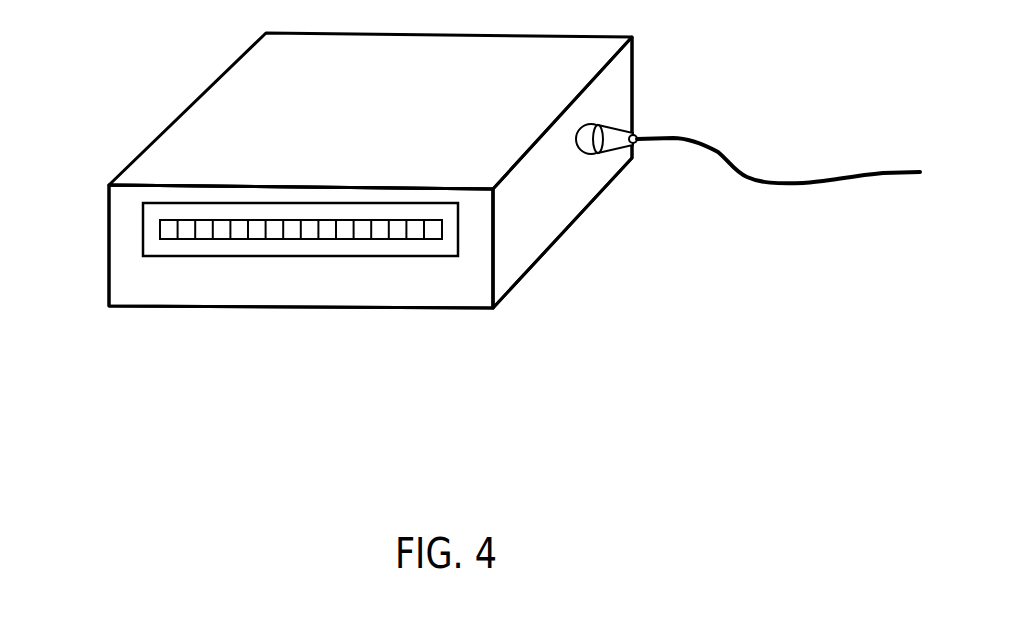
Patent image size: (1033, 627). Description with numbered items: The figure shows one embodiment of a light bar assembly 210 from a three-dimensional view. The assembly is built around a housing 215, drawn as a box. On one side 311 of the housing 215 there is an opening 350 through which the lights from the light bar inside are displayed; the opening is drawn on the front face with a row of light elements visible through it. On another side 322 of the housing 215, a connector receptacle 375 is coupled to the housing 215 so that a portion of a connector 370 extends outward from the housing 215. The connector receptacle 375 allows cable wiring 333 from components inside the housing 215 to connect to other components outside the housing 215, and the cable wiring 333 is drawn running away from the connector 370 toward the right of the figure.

The light bar assembly 210 is at (472, 182).
The housing 215 is at (178, 115).
The side 311 is at (143, 268).
The side 322 is at (547, 210).
The cable wiring 333 is at (803, 183).
The opening 350 is at (143, 235).
The connector 370 is at (637, 118).
The connector receptacle 375 is at (597, 153).